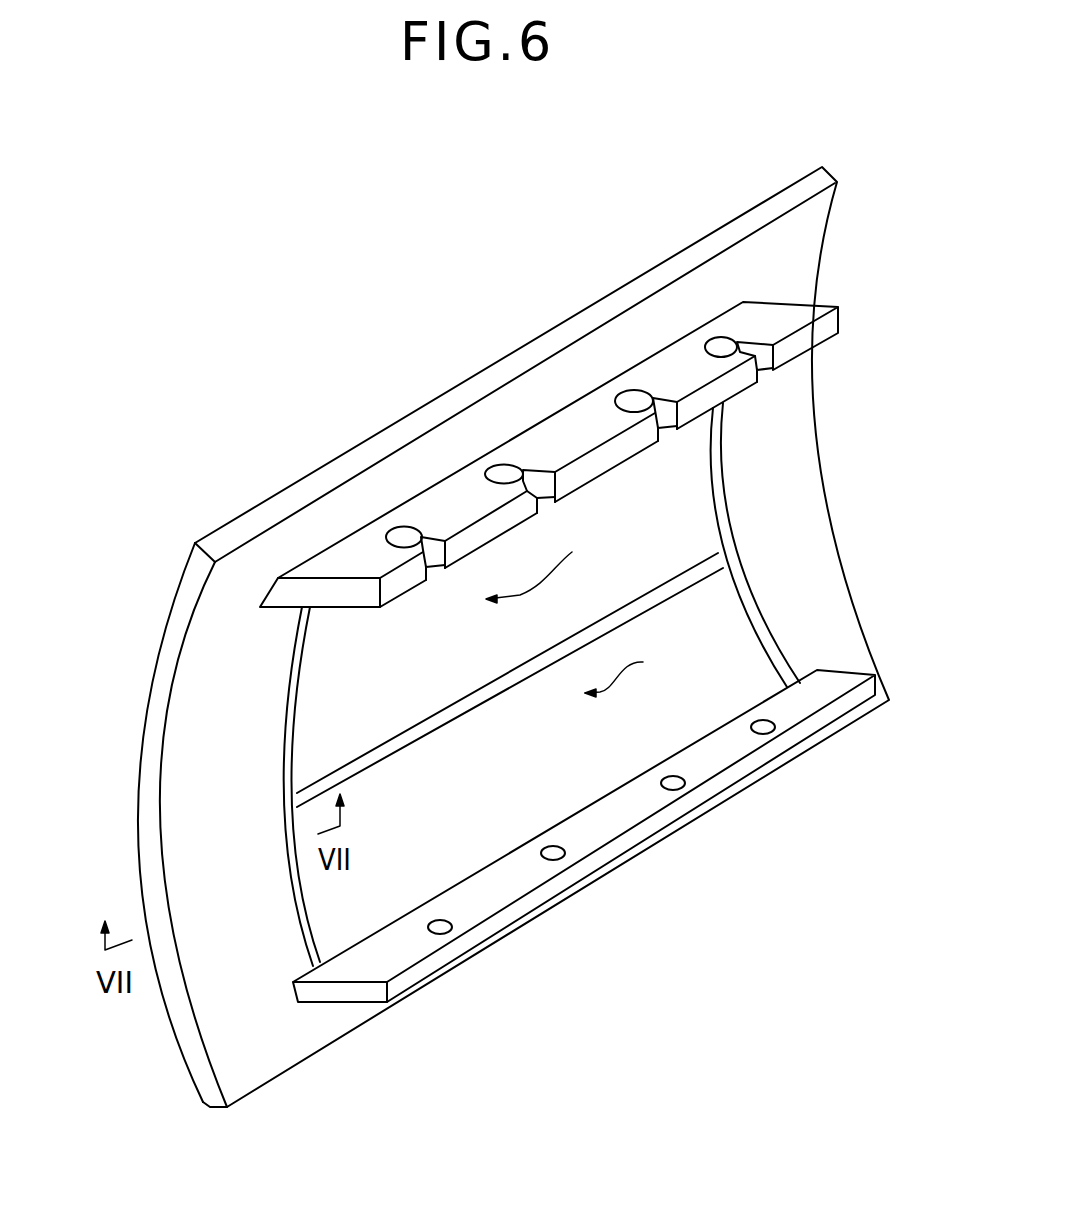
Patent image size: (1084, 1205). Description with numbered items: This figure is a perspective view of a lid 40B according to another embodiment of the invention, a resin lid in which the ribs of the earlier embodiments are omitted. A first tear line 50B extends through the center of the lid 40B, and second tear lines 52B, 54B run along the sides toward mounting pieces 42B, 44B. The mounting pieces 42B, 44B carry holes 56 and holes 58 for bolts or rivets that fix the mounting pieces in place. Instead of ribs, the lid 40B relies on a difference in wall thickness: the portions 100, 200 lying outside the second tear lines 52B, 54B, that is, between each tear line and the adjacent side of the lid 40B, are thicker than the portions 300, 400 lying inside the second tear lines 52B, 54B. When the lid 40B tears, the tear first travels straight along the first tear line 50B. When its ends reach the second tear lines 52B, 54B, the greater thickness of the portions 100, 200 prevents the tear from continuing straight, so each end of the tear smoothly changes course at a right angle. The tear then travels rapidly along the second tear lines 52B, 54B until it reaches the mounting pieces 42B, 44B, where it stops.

The lid 40B is at (615, 242).
The mounting piece 42B is at (549, 430).
The mounting piece 44B is at (584, 846).
The first tear line 50B is at (481, 690).
The second tear line 52B is at (763, 638).
The second tear line 54B is at (290, 710).
The hole 56 is at (402, 532).
The hole 58 is at (683, 773).
The portion outside second tear line 100 is at (489, 637).
The portion outside second tear line 200 is at (180, 751).
The portion inside second tear lines 300 is at (557, 568).
The portion inside second tear lines 400 is at (640, 668).